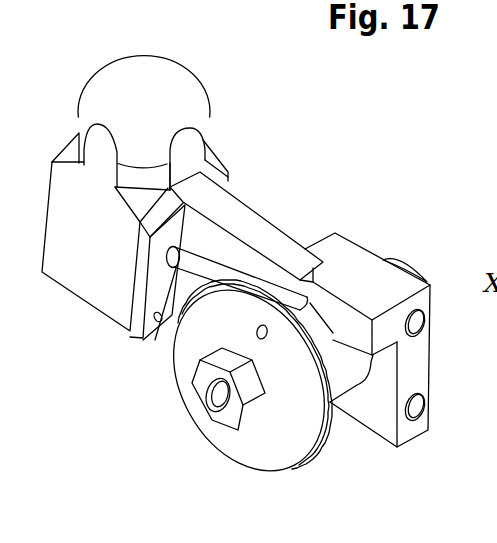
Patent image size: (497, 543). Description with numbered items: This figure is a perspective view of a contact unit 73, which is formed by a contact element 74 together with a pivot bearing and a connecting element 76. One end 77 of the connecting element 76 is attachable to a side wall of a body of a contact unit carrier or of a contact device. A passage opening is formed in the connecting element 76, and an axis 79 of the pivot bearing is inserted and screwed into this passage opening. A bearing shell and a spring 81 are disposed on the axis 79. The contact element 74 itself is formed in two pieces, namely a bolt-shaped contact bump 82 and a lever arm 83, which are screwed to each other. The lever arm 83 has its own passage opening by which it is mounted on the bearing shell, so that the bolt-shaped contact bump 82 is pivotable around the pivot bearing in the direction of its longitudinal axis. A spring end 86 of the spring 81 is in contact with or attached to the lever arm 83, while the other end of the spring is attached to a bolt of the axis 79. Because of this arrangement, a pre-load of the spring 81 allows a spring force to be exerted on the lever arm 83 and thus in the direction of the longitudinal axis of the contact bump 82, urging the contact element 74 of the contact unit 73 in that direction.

The contact unit 73 is at (299, 269).
The contact element 74 is at (240, 166).
The connecting element 76 is at (348, 252).
The end of connecting element 77 is at (436, 276).
The axis of pivot bearing 79 is at (260, 440).
The spring 81 is at (332, 405).
The bolt-shaped contact bump 82 is at (152, 85).
The lever arm 83 is at (250, 227).
The spring end 86 is at (146, 333).